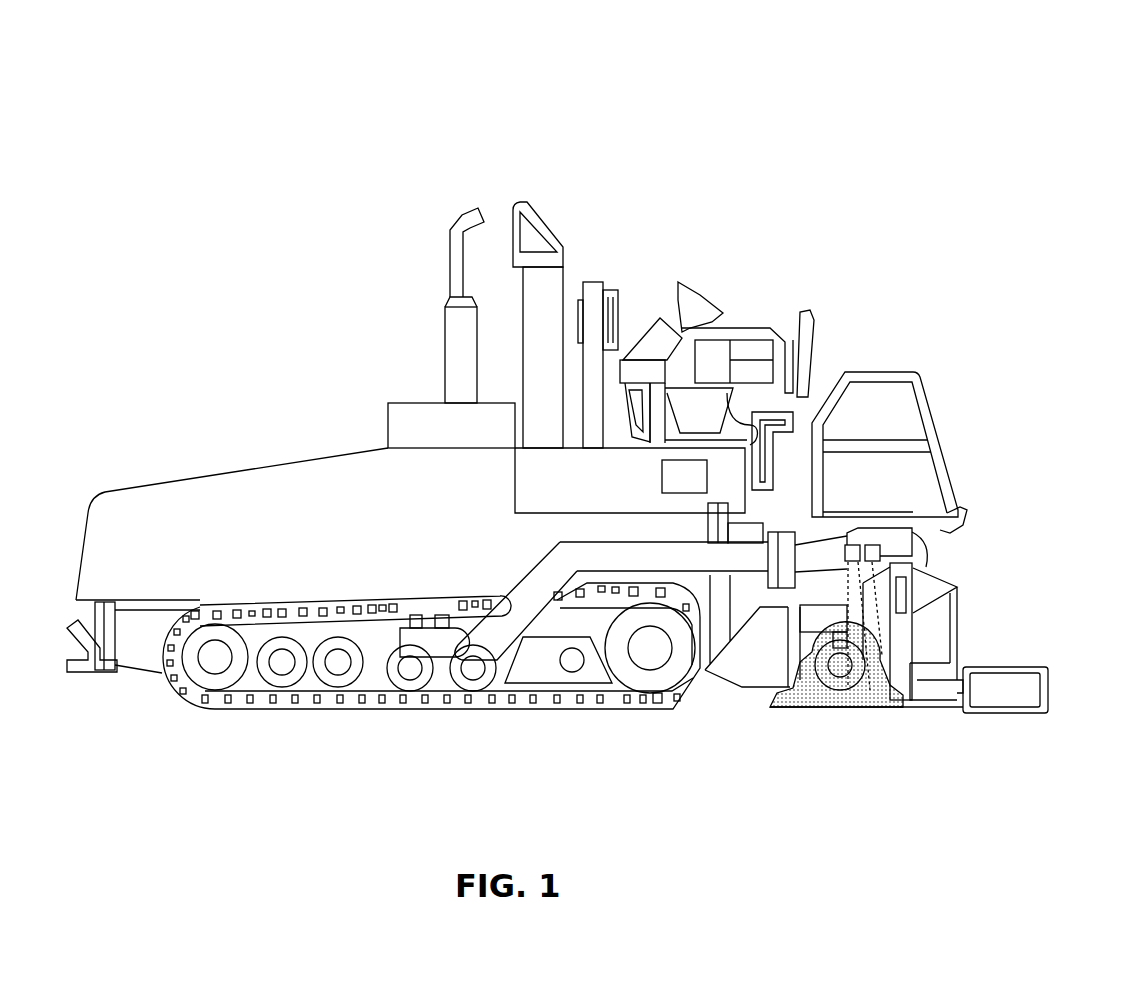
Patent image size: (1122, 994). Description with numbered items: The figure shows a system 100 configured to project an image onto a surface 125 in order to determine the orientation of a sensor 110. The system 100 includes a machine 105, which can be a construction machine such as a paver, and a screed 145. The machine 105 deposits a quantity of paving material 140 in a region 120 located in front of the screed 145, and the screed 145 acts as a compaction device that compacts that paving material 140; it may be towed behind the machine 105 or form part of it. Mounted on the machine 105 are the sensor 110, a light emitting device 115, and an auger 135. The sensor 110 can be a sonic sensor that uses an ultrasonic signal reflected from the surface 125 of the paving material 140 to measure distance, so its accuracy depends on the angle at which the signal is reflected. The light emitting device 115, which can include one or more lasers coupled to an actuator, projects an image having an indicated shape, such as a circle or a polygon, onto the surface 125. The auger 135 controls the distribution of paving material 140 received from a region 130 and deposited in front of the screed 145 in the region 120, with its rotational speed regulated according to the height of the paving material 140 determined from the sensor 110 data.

The system 100 is at (1035, 100).
The machine 105 is at (266, 463).
The sensor 110 is at (872, 540).
The light emitting device 115 is at (815, 543).
The region 120 is at (886, 611).
The surface 125 is at (868, 648).
The region 130 is at (808, 638).
The auger 135 is at (818, 688).
The paving material 140 is at (874, 700).
The screed 145 is at (930, 702).